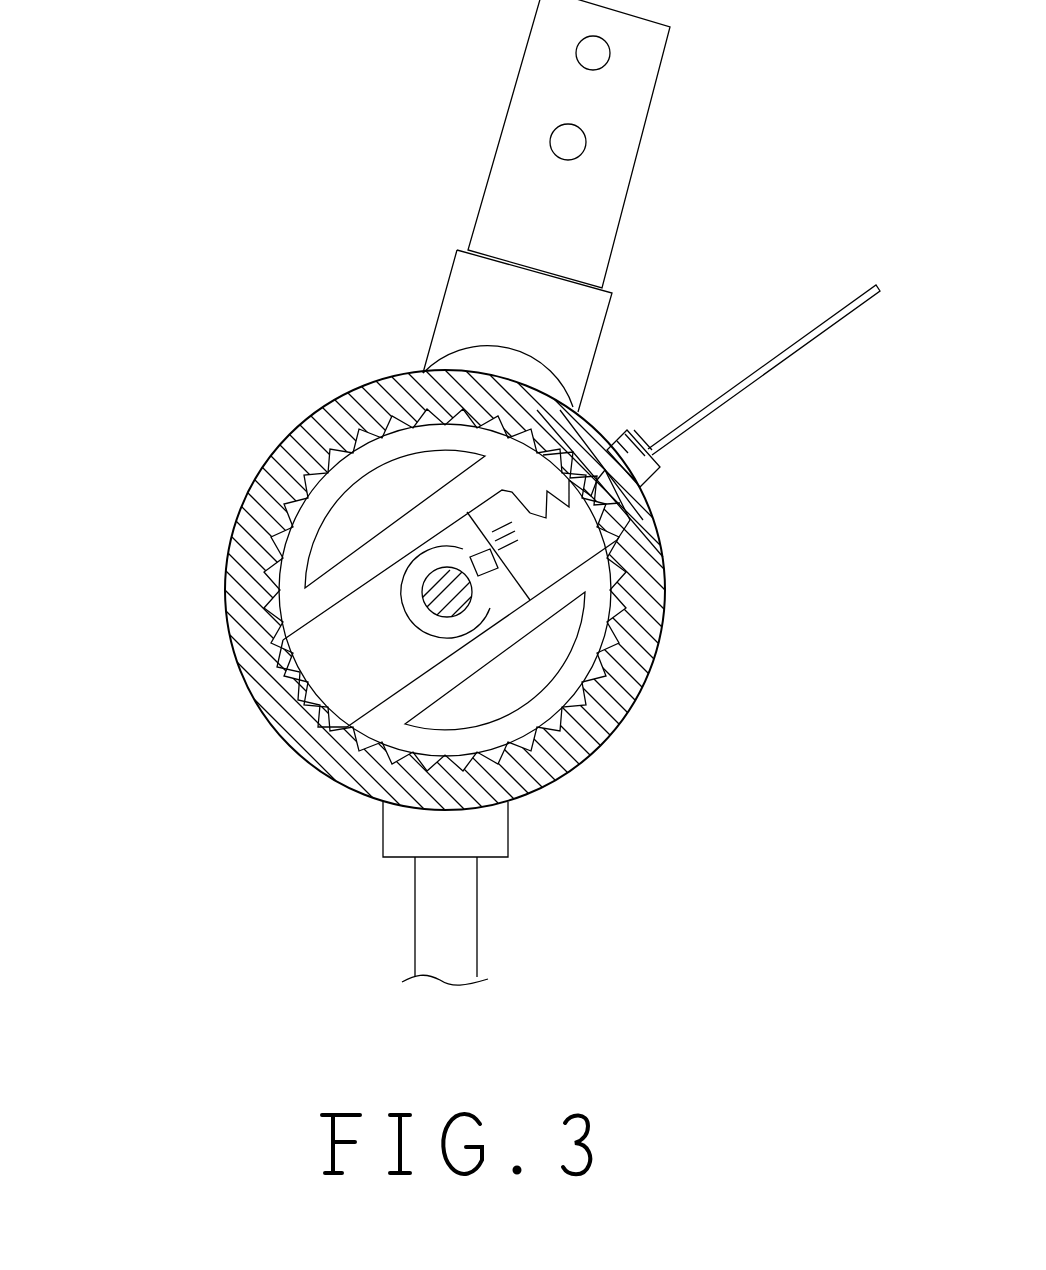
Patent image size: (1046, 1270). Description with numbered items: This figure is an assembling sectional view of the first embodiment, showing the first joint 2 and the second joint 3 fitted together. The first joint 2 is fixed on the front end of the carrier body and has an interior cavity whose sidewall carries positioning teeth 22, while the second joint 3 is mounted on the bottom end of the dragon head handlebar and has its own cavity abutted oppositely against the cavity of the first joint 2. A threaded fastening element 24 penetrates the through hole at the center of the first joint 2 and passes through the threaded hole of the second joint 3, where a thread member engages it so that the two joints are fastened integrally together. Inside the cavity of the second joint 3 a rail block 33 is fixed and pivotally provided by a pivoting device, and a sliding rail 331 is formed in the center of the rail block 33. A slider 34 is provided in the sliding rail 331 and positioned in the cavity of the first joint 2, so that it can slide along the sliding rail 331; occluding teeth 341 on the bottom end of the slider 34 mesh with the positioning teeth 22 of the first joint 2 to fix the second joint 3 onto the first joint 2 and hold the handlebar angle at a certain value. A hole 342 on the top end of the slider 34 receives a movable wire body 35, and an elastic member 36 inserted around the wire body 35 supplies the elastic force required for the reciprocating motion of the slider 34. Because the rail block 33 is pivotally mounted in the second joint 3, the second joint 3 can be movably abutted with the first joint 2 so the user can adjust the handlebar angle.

The first joint 2 is at (669, 587).
The positioning teeth 22 is at (338, 713).
The threaded fastening element 24 is at (638, 700).
The second joint 3 is at (423, 373).
The rail block 33 is at (280, 457).
The sliding rail 331 is at (575, 458).
The slider 34 is at (385, 583).
The occluding teeth 341 is at (283, 640).
The hole 342 is at (530, 560).
The wire body 35 is at (800, 347).
The elastic member 36 is at (600, 521).